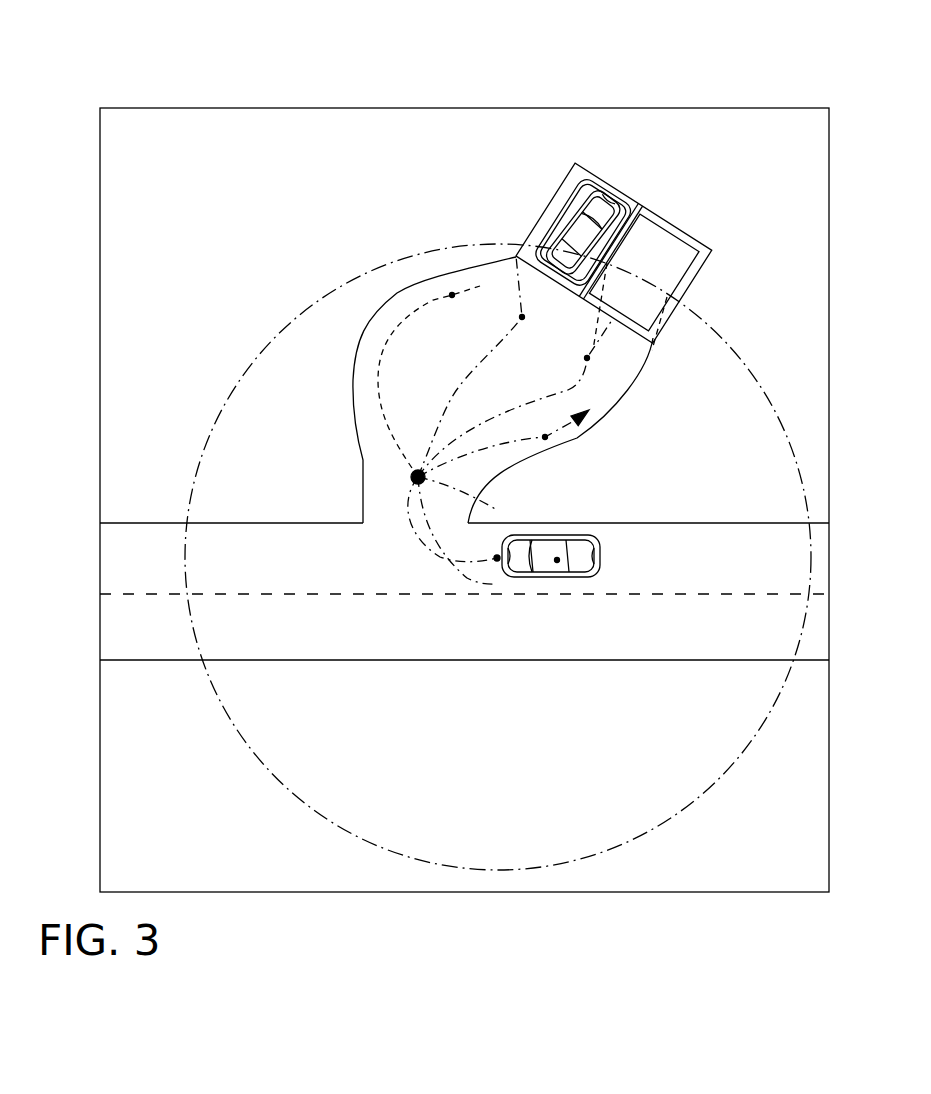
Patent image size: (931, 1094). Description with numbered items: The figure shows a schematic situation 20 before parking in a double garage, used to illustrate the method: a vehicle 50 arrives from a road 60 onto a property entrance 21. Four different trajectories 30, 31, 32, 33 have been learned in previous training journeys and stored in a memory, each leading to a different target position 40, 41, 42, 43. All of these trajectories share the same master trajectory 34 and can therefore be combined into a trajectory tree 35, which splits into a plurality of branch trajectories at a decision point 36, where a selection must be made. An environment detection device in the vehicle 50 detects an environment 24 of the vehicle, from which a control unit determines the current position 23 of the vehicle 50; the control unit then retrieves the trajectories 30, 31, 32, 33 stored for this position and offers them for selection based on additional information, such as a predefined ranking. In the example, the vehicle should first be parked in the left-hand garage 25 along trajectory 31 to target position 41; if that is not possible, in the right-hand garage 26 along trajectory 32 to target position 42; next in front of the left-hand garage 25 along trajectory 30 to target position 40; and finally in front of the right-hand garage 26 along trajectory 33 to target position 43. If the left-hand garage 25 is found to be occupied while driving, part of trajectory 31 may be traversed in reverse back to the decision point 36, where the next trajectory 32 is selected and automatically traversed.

The schematic situation 20 is at (123, 90).
The property entrance 21 is at (556, 185).
The current position 23 is at (497, 558).
The environment 24 is at (303, 312).
The left-hand garage 25 is at (597, 198).
The right-hand garage 26 is at (650, 228).
The trajectory 30 is at (452, 295).
The trajectory 31 is at (522, 317).
The trajectory 32 is at (587, 358).
The trajectory 33 is at (545, 437).
The master trajectory 34 is at (497, 510).
The trajectory tree 35 is at (370, 488).
The decision point 36 is at (405, 470).
The target position 40 is at (482, 275).
The target position 41 is at (590, 217).
The target position 42 is at (657, 247).
The target position 43 is at (593, 408).
The vehicle 50 is at (557, 560).
The road 60 is at (160, 633).